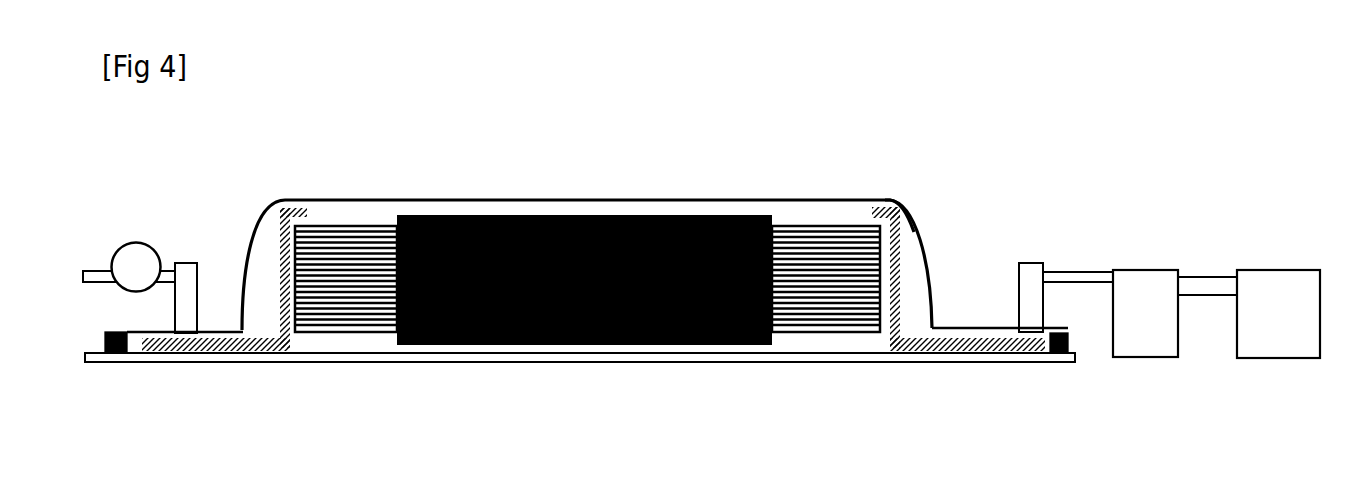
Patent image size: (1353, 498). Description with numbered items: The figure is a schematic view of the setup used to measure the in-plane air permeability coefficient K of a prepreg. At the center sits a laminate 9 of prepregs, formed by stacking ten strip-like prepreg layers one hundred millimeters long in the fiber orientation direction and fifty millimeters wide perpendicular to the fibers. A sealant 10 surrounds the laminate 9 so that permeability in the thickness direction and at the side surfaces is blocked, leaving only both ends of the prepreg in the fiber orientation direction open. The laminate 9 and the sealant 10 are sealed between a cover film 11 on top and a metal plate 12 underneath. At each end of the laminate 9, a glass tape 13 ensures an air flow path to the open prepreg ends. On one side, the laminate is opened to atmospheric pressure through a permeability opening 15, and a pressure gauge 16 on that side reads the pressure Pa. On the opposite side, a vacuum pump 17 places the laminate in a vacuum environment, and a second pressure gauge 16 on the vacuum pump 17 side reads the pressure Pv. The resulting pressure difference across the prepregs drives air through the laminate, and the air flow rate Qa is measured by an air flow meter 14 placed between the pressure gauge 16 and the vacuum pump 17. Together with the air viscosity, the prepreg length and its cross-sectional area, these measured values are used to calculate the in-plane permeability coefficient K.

The laminate of prepregs 9 is at (355, 243).
The sealant 10 is at (420, 215).
The cover film 11 is at (517, 200).
The metal plate 12 is at (850, 348).
The glass tape 13 is at (890, 200).
The air flow meter 14 is at (1143, 280).
The permeability opening 15 is at (92, 270).
The pressure gauge 16 is at (150, 246).
The vacuum pump 17 is at (1247, 283).